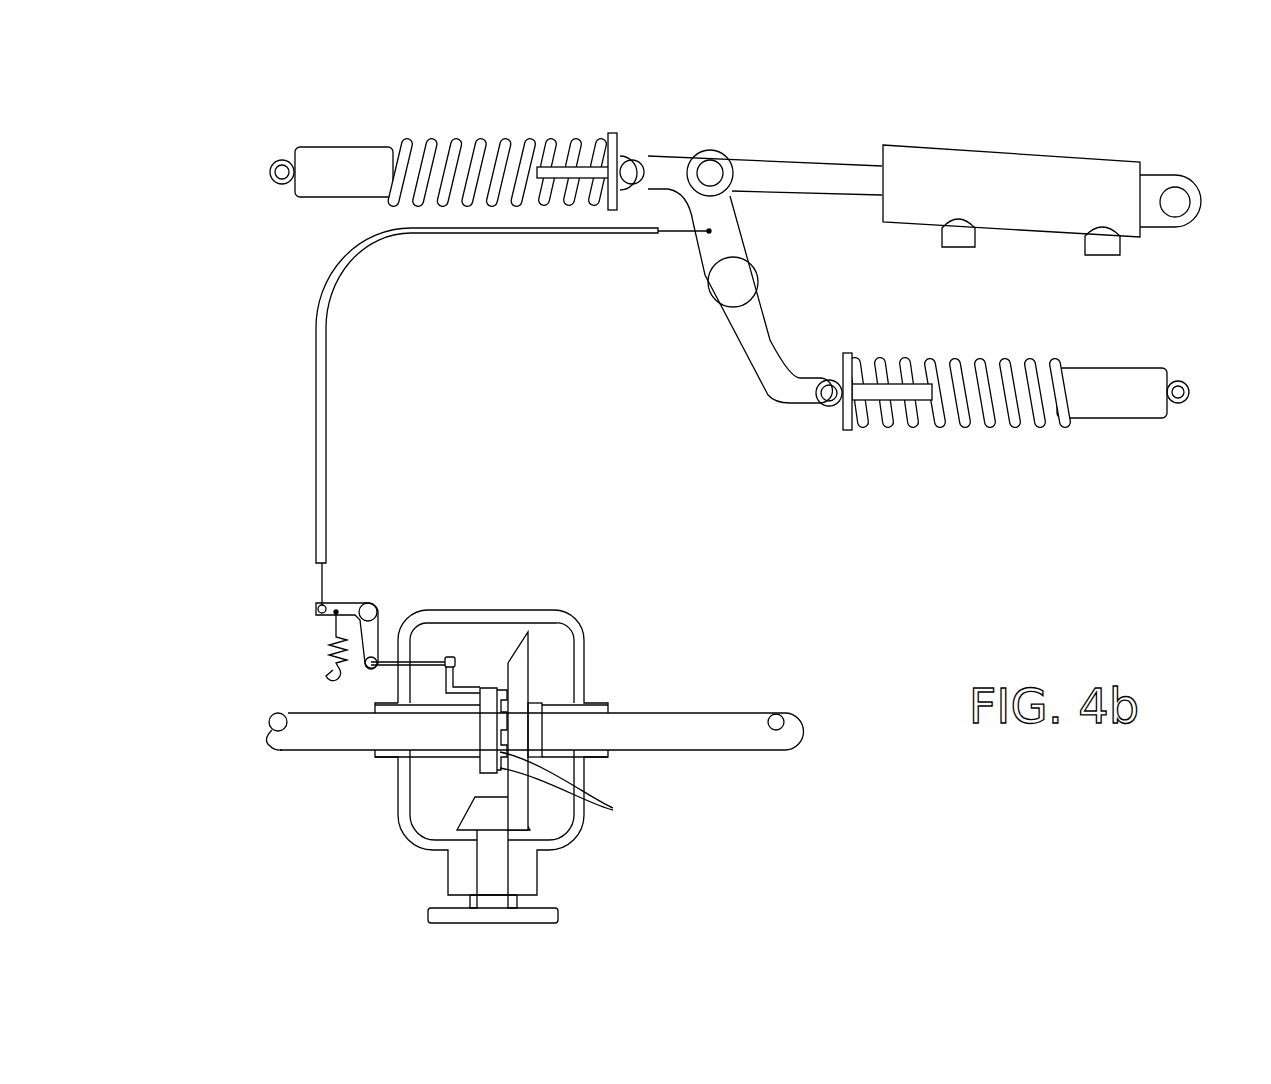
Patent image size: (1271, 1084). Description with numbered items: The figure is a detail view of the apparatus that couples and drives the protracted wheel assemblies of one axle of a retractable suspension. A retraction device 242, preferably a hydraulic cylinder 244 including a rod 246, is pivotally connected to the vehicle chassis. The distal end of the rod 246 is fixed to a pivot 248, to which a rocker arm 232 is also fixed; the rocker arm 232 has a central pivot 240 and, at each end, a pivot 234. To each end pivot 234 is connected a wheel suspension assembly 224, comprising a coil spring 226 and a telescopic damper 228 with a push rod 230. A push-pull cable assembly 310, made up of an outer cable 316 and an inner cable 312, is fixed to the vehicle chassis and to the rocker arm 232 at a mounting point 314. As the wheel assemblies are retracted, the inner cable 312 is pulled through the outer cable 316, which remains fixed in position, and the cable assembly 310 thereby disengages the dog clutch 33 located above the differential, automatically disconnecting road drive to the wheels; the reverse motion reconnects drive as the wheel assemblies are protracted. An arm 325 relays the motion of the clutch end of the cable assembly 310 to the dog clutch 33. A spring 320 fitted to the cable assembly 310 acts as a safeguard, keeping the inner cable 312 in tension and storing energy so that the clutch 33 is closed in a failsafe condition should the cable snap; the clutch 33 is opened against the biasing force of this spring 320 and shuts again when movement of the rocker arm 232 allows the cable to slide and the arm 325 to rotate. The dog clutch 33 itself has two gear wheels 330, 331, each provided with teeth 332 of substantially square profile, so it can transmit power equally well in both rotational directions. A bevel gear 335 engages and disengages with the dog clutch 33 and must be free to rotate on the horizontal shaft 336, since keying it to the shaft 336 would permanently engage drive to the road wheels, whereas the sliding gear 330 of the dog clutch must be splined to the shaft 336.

The dog clutch 33 is at (548, 742).
The wheel suspension assembly 224 is at (705, 304).
The coil spring 226 is at (390, 203).
The telescopic damper 228 is at (322, 162).
The push rod 230 is at (565, 170).
The rocker arm 232 is at (739, 255).
The pivot 234 is at (632, 160).
The central pivot 240 is at (752, 285).
The retraction device 242 is at (1042, 173).
The hydraulic cylinder 244 is at (1008, 205).
The rod 246 is at (780, 175).
The pivot 248 is at (712, 170).
The push-pull cable assembly 310 is at (493, 404).
The inner cable 312 is at (668, 240).
The mounting point 314 is at (712, 232).
The outer cable 316 is at (498, 234).
The spring 320 is at (332, 650).
The arm 325 is at (346, 610).
The sliding gear 330 is at (482, 688).
The gear wheel 331 is at (502, 690).
The teeth 332 is at (613, 809).
The bevel gear 335 is at (520, 675).
The horizontal shaft 336 is at (712, 733).